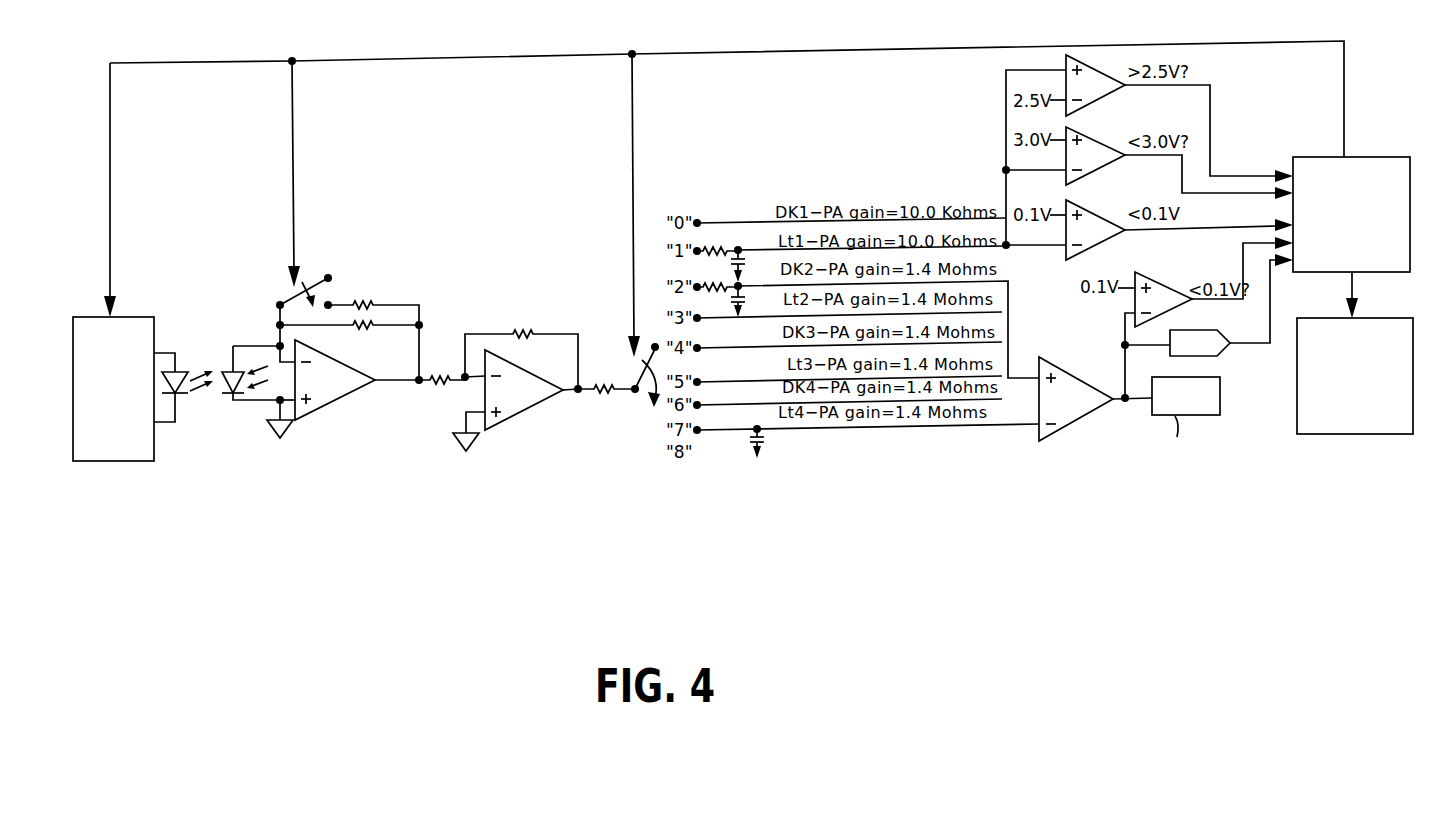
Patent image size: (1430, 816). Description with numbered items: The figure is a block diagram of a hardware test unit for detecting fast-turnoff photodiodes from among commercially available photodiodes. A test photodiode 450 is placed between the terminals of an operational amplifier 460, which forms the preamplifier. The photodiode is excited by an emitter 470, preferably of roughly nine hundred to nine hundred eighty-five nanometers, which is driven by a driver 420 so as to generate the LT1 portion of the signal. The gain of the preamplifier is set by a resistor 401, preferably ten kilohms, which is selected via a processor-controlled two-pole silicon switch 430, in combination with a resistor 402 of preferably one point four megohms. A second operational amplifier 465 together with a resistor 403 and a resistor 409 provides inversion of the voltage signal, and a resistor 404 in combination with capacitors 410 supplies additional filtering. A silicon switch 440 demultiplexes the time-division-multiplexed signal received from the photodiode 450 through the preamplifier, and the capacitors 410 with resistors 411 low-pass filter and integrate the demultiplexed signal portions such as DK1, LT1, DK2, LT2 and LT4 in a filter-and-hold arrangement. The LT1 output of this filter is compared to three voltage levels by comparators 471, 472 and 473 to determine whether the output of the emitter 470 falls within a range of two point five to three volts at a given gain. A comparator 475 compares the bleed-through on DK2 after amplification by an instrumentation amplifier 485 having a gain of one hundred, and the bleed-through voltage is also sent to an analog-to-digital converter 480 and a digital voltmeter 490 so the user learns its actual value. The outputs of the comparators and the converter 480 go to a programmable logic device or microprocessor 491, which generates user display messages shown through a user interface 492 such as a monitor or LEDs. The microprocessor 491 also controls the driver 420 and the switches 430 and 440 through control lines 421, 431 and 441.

The resistor 401 is at (397, 305).
The resistor 402 is at (360, 327).
The resistor 403 is at (522, 334).
The resistor 404 is at (603, 388).
The resistor 409 is at (441, 382).
The capacitors 410 is at (766, 354).
The resistors 411 is at (719, 258).
The driver 420 is at (128, 461).
The control line 421 is at (104, 171).
The switch 430 is at (290, 278).
The control line 431 is at (294, 167).
The silicon switch 440 is at (637, 394).
The control line 441 is at (633, 153).
The test photodiode 450 is at (229, 398).
The operational amplifier 460 is at (338, 401).
The second operational amplifier 465 is at (520, 412).
The emitter 470 is at (161, 352).
The comparator 471 is at (1090, 97).
The comparator 472 is at (1090, 170).
The comparator 473 is at (1090, 245).
The comparator 475 is at (1168, 287).
The analog-to-digital converter 480 is at (1219, 339).
The instrumentation amplifier 485 is at (1067, 425).
The digital voltmeter 490 is at (1201, 406).
The microprocessor 491 is at (1310, 157).
The user interface 492 is at (1320, 434).